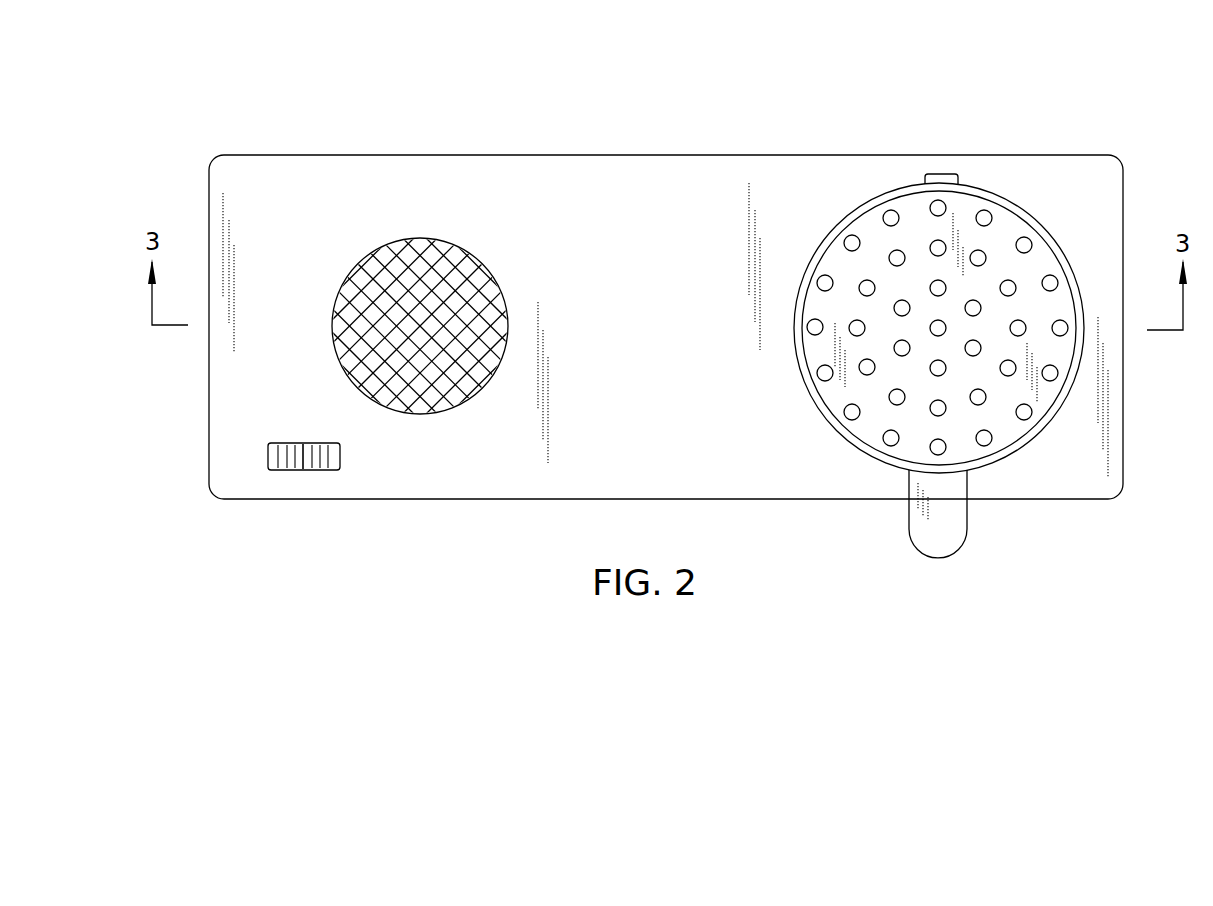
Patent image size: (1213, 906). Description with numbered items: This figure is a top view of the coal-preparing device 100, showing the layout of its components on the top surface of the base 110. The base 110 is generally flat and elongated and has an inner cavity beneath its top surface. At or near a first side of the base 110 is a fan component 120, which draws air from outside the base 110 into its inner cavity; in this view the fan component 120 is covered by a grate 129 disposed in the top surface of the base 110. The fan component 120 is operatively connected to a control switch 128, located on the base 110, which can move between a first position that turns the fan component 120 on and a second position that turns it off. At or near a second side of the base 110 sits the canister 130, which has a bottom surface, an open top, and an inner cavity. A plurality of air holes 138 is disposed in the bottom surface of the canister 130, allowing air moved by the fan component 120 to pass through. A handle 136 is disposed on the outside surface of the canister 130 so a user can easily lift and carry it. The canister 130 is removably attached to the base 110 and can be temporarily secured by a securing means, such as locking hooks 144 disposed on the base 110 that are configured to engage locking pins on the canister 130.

The coal-preparing device 100 is at (634, 666).
The base 110 is at (492, 500).
The fan component 120 is at (417, 242).
The grate 129 is at (463, 253).
The control switch 128 is at (297, 470).
The canister 130 is at (867, 202).
The air holes 138 is at (893, 404).
The handle 136 is at (958, 548).
The locking hooks 144 is at (940, 175).